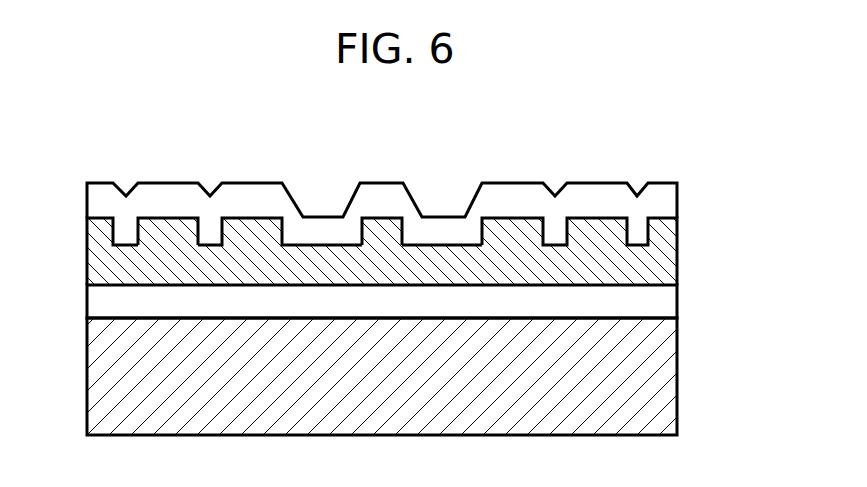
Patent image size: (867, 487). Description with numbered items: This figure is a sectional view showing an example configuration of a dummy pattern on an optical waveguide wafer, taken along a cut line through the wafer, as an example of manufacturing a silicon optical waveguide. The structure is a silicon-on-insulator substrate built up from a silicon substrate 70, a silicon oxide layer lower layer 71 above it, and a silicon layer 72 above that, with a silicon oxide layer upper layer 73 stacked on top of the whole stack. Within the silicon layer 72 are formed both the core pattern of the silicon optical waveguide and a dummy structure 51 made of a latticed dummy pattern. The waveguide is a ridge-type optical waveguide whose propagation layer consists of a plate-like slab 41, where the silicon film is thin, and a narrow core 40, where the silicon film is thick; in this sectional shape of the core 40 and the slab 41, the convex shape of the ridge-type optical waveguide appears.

The silicon substrate 70 is at (665, 357).
The silicon oxide layer lower layer 71 is at (665, 302).
The silicon layer 72 is at (665, 257).
The silicon oxide layer upper layer 73 is at (665, 202).
The dummy structure 51 is at (166, 230).
The core 40 is at (388, 220).
The slab 41 is at (442, 247).